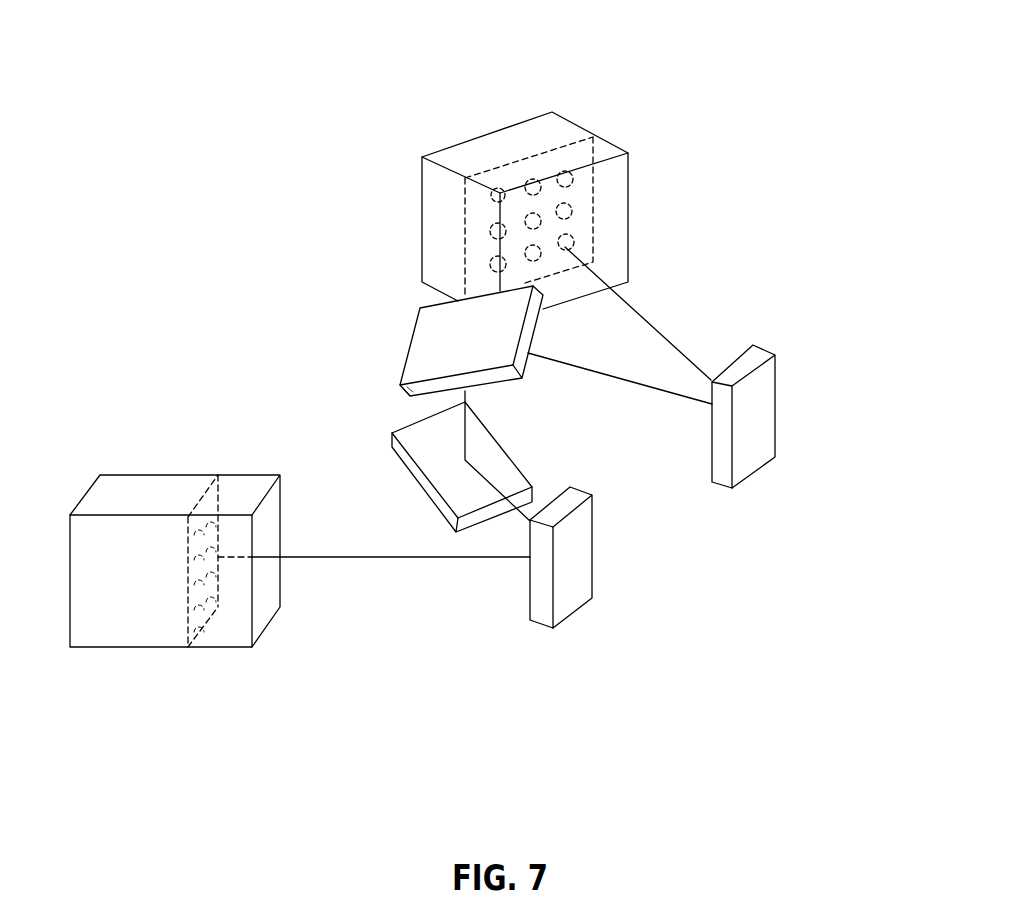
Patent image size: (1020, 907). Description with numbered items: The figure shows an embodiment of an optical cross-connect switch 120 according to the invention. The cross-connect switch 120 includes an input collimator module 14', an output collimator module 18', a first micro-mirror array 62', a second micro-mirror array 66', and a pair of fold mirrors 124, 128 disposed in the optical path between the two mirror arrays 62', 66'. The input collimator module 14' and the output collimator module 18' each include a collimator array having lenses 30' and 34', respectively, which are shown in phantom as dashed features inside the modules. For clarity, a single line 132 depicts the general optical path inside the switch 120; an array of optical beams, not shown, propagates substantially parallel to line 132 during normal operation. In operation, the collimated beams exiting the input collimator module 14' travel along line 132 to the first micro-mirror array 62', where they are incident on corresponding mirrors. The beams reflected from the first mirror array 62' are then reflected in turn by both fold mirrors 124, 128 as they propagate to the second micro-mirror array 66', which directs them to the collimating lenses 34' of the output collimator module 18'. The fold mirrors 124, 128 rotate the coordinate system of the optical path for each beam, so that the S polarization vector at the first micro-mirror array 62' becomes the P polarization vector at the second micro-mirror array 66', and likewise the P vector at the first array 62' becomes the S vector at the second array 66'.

The optical cross-connect switch 120 is at (842, 121).
The output collimator module 18' is at (556, 161).
The collimating lenses 34' is at (590, 221).
The fold mirror 128 is at (435, 352).
The fold mirror 124 is at (420, 450).
The second micro-mirror array 66' is at (778, 416).
The first micro-mirror array 62' is at (592, 557).
The input collimator module 14' is at (175, 529).
The collimating lenses 30' is at (197, 589).
The line depicting optical path 132 is at (647, 325).